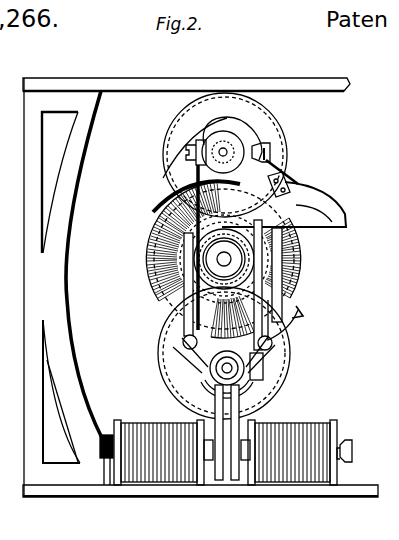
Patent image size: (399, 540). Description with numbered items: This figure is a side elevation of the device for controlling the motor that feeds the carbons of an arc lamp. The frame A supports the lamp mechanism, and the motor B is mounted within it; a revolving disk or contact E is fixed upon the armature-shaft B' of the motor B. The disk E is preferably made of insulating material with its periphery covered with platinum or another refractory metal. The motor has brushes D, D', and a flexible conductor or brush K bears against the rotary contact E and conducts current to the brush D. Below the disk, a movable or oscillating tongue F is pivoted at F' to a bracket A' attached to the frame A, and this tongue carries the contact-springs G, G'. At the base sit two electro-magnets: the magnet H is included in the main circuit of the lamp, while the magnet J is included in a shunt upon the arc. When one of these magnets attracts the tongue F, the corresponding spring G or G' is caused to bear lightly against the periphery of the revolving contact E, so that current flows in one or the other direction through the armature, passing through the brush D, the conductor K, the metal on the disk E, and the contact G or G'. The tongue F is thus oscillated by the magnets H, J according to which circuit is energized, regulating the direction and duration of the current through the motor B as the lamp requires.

The frame A is at (191, 274).
The bracket A' is at (219, 432).
The motor B is at (216, 259).
The armature-shaft B' is at (230, 263).
The brush D is at (222, 211).
The brush D' is at (293, 320).
The revolving disk or contact E is at (224, 259).
The movable or oscillating tongue F is at (278, 321).
The pivot F' is at (224, 353).
The contact-spring G is at (287, 285).
The contact-spring G' is at (165, 291).
The electro-magnet H is at (168, 425).
The electro-magnet J is at (306, 426).
The flexible conductor or brush K is at (303, 236).